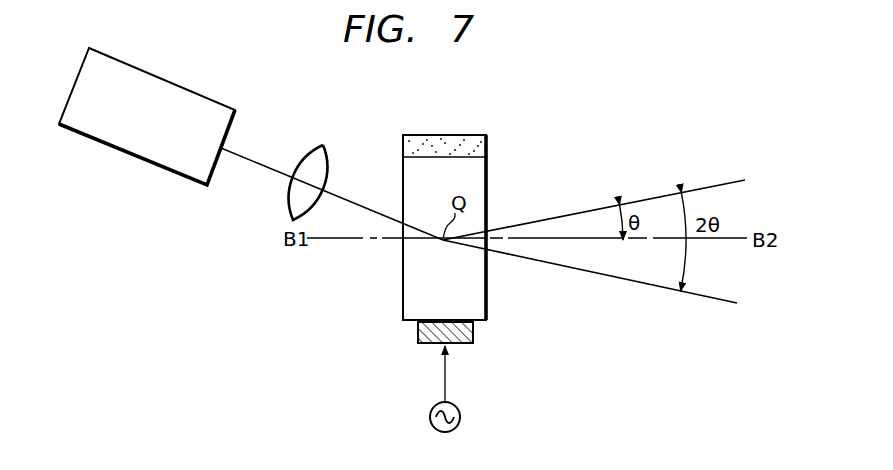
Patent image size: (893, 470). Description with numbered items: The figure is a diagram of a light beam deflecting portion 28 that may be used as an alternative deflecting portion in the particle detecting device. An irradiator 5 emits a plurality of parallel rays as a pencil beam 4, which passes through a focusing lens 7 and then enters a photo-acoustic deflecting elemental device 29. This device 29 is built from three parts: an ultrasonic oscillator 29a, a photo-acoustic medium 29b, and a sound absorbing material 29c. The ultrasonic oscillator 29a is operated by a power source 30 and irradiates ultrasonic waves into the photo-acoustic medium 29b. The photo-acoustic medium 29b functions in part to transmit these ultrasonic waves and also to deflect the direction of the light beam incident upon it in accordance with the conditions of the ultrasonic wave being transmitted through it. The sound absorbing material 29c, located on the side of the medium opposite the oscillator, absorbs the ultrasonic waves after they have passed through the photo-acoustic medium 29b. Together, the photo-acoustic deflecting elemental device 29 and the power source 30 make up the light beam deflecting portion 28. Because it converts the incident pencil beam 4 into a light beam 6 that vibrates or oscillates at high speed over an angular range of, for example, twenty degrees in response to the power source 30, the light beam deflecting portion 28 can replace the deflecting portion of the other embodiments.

The pencil beam 4 is at (248, 158).
The irradiator 5 is at (208, 106).
The light beam 6 is at (652, 198).
The focusing lens 7 is at (322, 144).
The light beam deflecting portion 28 is at (476, 335).
The photo-acoustic deflecting elemental device 29 is at (450, 212).
The ultrasonic oscillator 29a is at (418, 331).
The photo-acoustic medium 29b is at (403, 272).
The sound absorbing material 29c is at (478, 150).
The power source 30 is at (460, 412).